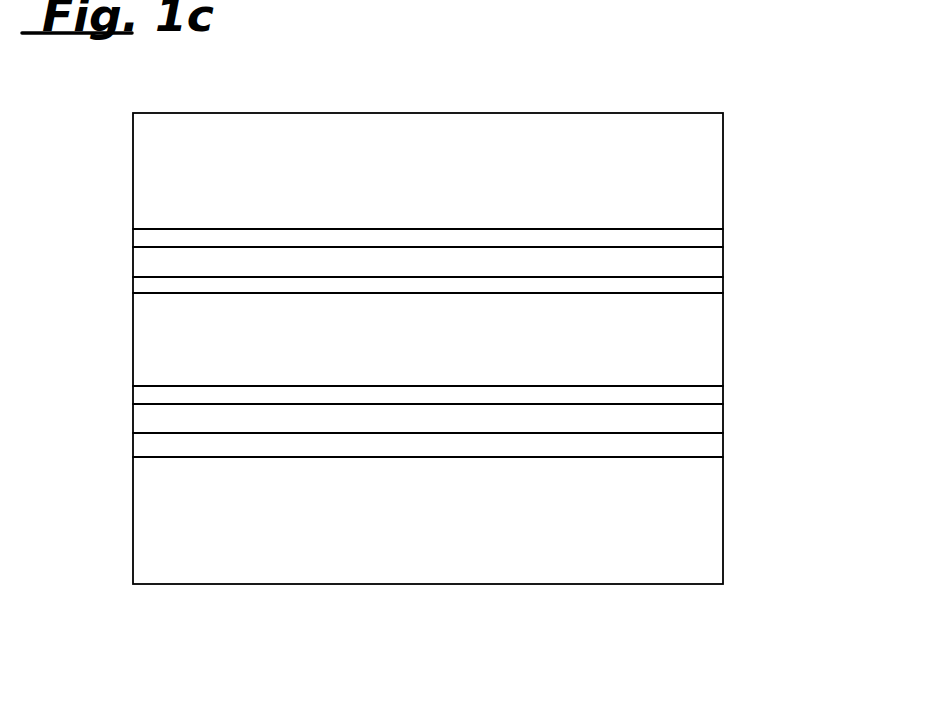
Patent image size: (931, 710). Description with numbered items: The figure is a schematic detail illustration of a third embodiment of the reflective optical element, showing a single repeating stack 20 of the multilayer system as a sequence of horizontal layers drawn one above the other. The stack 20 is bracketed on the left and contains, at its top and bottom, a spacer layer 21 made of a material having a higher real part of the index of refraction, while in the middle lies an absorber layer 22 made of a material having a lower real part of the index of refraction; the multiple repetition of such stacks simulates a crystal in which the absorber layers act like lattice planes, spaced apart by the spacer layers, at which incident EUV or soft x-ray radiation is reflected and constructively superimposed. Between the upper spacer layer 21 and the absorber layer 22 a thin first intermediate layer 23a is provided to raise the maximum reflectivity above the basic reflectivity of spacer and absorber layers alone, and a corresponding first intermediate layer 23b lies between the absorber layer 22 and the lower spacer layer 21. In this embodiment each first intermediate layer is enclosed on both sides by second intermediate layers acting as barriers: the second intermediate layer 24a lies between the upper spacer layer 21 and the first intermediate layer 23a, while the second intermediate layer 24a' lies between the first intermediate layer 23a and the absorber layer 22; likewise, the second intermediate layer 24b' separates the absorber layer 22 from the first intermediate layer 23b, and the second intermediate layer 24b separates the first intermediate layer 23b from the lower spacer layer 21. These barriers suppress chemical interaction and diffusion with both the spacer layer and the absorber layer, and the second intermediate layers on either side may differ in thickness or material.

The stack 20 is at (133, 229).
The spacer layer 21 is at (723, 170).
The absorber layer 22 is at (723, 340).
The first intermediate layer 23a is at (723, 265).
The first intermediate layer 23b is at (723, 418).
The second intermediate layer 24a is at (474, 216).
The second intermediate layer 24a' is at (480, 296).
The second intermediate layer 24b is at (474, 462).
The second intermediate layer 24b' is at (481, 387).